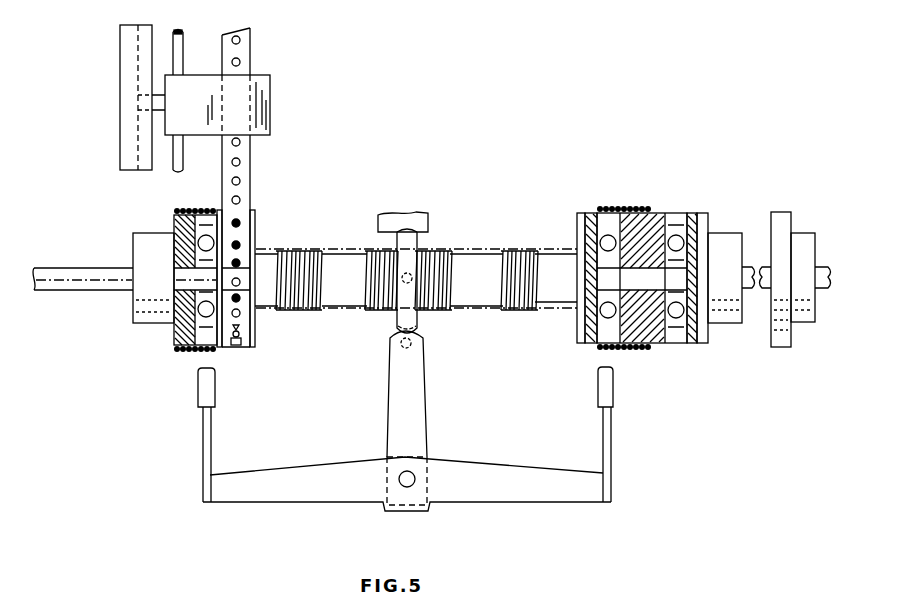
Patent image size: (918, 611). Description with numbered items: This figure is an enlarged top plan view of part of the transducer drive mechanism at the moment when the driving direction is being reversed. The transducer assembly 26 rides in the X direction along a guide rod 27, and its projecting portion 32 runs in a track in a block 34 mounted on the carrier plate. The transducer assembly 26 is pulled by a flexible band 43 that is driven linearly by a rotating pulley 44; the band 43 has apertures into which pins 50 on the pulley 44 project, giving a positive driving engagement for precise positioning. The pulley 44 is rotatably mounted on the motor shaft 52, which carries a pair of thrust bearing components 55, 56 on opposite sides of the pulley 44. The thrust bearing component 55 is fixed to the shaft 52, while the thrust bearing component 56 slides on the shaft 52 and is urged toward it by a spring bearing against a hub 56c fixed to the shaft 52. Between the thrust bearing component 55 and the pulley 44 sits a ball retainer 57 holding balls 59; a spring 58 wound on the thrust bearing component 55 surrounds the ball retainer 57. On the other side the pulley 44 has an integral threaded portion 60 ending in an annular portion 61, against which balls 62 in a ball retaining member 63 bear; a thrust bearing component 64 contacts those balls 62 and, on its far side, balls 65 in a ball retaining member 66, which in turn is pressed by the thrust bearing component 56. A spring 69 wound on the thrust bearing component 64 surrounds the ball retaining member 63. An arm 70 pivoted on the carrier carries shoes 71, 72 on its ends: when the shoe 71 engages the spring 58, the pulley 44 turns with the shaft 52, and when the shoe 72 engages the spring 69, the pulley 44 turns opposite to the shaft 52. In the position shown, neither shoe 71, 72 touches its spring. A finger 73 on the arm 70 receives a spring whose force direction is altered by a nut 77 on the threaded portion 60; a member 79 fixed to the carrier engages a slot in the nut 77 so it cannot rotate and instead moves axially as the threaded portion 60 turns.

The transducer assembly 26 is at (270, 125).
The guide rod 27 is at (184, 42).
The projecting portion 32 is at (159, 93).
The block 34 is at (121, 86).
The flexible band 43 is at (251, 195).
The pulley 44 is at (255, 218).
The pins 50 is at (240, 342).
The shaft 52 is at (92, 292).
The thrust bearing component 55 is at (151, 233).
The thrust bearing component 56 is at (708, 213).
The hub 56c is at (783, 348).
The ball retainer 57 is at (212, 211).
The spring 58 is at (180, 352).
The balls 59 is at (176, 326).
The threaded portion 60 is at (446, 253).
The annular portion 61 is at (578, 335).
The balls 62 is at (590, 232).
The ball retaining member 63 is at (605, 352).
The thrust bearing component 64 is at (655, 345).
The balls 65 is at (690, 345).
The ball retaining member 66 is at (692, 213).
The spring 69 is at (647, 199).
The arm 70 is at (500, 462).
The shoe 71 is at (216, 385).
The shoe 72 is at (613, 382).
The finger 73 is at (425, 402).
The nut 77 is at (416, 320).
The member 79 is at (425, 212).